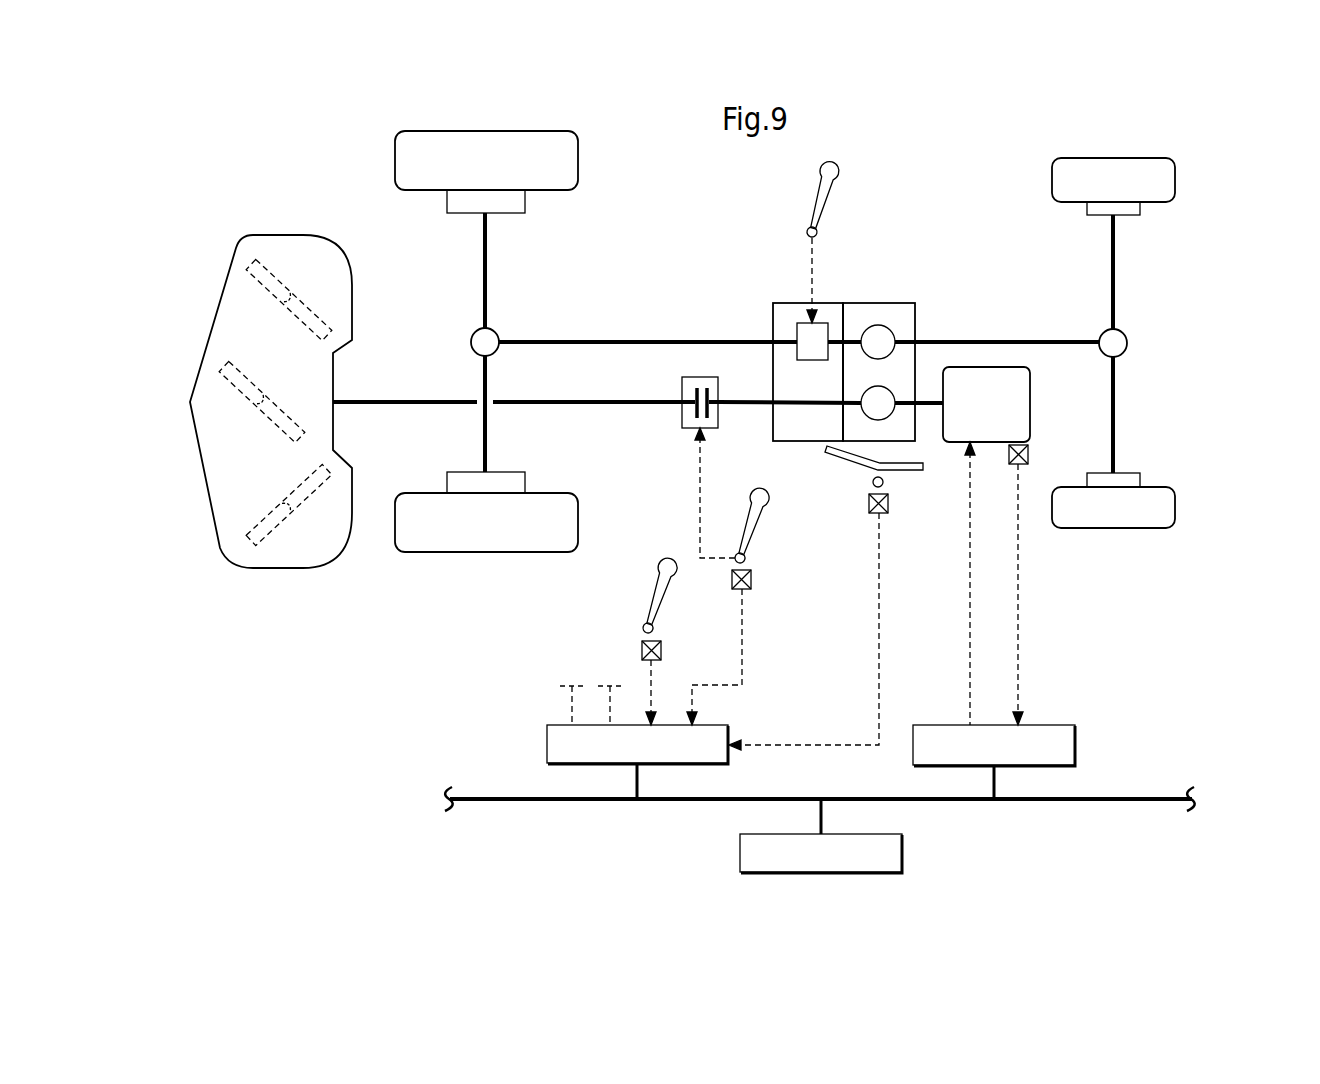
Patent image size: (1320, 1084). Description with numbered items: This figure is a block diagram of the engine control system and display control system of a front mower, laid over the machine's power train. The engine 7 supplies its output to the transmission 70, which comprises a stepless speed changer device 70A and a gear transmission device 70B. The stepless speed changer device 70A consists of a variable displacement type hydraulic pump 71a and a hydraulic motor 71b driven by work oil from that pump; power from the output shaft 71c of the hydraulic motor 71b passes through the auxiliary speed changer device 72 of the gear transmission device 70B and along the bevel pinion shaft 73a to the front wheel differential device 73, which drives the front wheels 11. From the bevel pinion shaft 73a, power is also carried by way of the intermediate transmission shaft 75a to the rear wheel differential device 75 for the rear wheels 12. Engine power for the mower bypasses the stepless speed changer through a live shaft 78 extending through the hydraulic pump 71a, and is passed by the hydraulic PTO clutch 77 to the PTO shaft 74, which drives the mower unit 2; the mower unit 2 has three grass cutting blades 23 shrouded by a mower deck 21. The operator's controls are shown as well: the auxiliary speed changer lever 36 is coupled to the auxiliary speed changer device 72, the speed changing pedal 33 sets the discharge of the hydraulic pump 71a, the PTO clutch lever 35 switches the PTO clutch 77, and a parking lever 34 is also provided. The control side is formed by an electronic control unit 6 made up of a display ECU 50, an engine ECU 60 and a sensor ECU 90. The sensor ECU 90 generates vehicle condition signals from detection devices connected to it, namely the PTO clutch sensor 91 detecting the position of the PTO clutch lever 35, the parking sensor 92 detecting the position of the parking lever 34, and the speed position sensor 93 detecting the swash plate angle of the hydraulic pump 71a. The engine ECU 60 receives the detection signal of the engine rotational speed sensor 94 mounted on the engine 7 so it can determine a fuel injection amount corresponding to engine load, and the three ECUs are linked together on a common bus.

The mower unit 2 is at (266, 359).
The mower deck 21 is at (215, 312).
The grass cutting/mowing blades 23 is at (315, 320).
The front wheels 11 is at (395, 157).
The rear wheels 12 is at (1175, 180).
The front wheel differential device 73 is at (483, 340).
The bevel pinion shaft 73a is at (610, 340).
The PTO shaft 74 is at (405, 400).
The rear wheel differential device 75 is at (1115, 345).
The intermediate transmission shaft 75a is at (1055, 345).
The hydraulic PTO clutch 77 is at (680, 412).
The live shaft 78 is at (740, 405).
The transmission 70 is at (885, 352).
The stepless speed changer device 70A is at (954, 353).
The gear transmission device 70B is at (800, 352).
The variable displacement type hydraulic pump 71a is at (870, 410).
The hydraulic motor 71b is at (880, 340).
The output shaft 71c is at (856, 335).
The auxiliary speed changer device 72 is at (800, 350).
The engine 7 is at (958, 442).
The auxiliary speed changer lever 36 is at (840, 175).
The PTO clutch lever 35 is at (765, 512).
The parking lever 34 is at (660, 578).
The speed changing pedal 33 is at (858, 465).
The PTO clutch sensor 91 is at (752, 580).
The parking sensor 92 is at (641, 648).
The speed position sensor 93 is at (889, 500).
The engine rotational speed sensor 94 is at (1030, 452).
The sensor ECU 90 is at (547, 745).
The engine ECU 60 is at (1075, 748).
The display ECU 50 is at (902, 850).
The electronic control unit (ECU) 6 is at (820, 799).